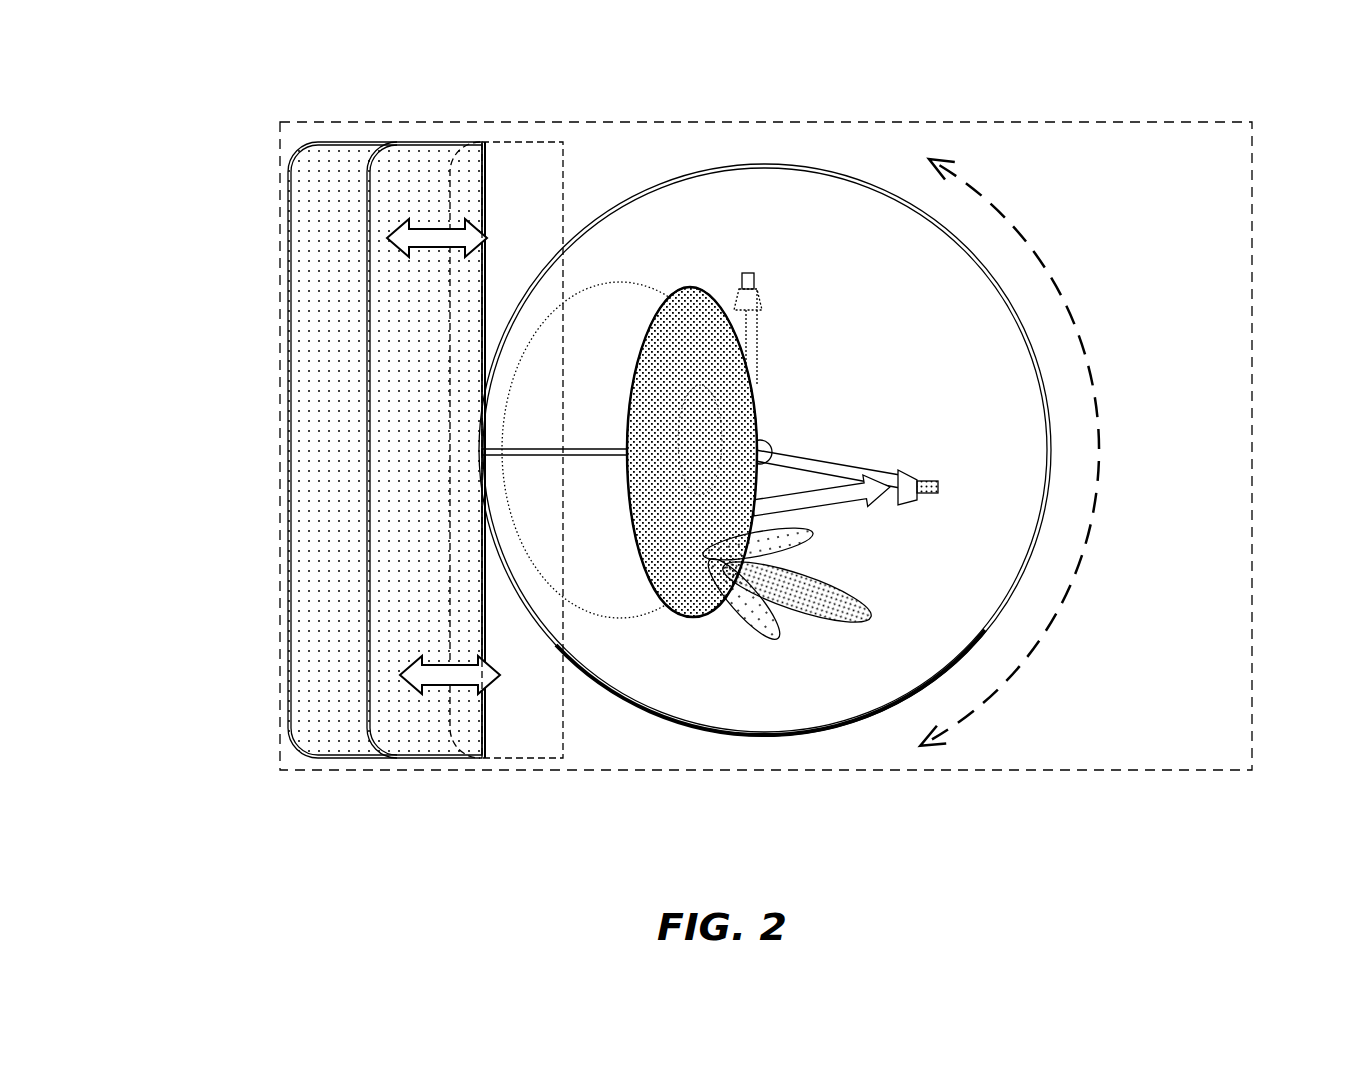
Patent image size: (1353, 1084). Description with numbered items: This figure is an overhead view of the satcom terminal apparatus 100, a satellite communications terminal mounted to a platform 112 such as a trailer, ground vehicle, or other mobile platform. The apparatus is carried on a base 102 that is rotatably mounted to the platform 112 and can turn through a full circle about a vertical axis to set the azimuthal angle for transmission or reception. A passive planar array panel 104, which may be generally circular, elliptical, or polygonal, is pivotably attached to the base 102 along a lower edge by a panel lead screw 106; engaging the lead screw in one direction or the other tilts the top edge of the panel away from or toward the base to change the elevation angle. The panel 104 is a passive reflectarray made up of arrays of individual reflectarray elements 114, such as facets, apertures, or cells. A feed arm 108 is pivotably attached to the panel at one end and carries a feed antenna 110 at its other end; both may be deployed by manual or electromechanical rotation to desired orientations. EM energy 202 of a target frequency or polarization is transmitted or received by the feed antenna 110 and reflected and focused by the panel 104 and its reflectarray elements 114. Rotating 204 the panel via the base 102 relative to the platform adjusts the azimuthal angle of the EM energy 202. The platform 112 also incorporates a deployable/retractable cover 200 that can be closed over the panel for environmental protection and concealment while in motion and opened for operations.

The satcom terminal apparatus 100 is at (172, 113).
The base 102 is at (700, 740).
The passive planar array panel 104 is at (637, 355).
The panel lead screw 106 is at (533, 457).
The feed arm 108 is at (843, 460).
The feed antenna 110 is at (748, 273).
The platform 112 is at (1252, 447).
The reflectarray elements 114 is at (691, 365).
The deployable/retractable cover 200 is at (330, 385).
The EM energy 202 is at (815, 607).
The rotating 204 is at (1052, 272).